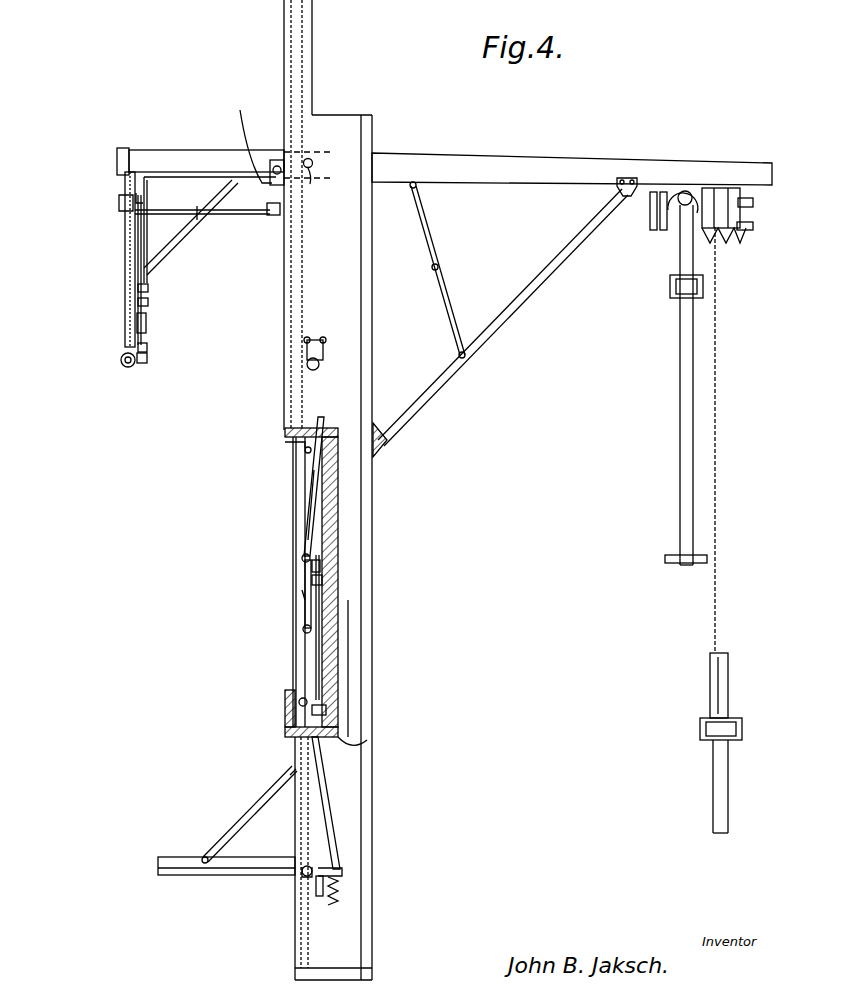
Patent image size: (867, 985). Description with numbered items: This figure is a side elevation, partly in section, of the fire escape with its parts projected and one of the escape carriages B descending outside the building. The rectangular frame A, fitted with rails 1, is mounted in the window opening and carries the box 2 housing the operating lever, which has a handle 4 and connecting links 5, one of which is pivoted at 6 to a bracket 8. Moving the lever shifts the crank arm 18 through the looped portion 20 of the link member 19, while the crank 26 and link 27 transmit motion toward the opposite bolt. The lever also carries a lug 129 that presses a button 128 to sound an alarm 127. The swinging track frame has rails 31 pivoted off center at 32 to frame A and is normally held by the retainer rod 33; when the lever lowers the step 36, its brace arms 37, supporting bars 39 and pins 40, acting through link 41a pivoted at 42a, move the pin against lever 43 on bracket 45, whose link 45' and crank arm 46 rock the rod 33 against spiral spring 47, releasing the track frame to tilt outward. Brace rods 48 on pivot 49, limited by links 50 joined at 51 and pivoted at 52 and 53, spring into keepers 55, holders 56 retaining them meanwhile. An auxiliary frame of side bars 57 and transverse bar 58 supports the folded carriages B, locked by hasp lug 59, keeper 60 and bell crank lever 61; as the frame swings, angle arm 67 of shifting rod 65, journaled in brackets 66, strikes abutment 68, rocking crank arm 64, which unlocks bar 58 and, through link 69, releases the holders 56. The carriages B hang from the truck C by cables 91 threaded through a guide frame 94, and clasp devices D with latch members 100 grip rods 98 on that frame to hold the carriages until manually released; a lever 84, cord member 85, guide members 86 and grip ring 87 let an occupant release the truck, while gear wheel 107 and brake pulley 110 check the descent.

The rails 1 is at (283, 47).
The rectangular frame A is at (350, 118).
The box 2 is at (293, 535).
The handle 4 is at (303, 632).
The connecting links 5 is at (305, 600).
The pivot 6 is at (304, 563).
The bracket 8 is at (340, 541).
The crank arm 18 is at (300, 445).
The link member 19 is at (312, 520).
The looped portion 20 is at (310, 475).
The crank 26 is at (367, 742).
The link 27 is at (321, 676).
The rails 31 is at (510, 160).
The pivot 32 is at (308, 180).
The retainer rod 33 is at (340, 700).
The step 36 is at (172, 856).
The brace arms 37 is at (240, 822).
The supporting bars 39 is at (238, 876).
The pins 40 is at (302, 866).
The link 41a is at (296, 770).
The pivot 42a is at (300, 592).
The lever 43 is at (342, 868).
The bracket 45 is at (291, 908).
The link 45' is at (360, 803).
The crank arm 46 is at (298, 702).
The spiral spring 47 is at (340, 888).
The brace rods 48 is at (522, 298).
The pivot 49 is at (628, 178).
The links 50 is at (455, 308).
The pivot 51 is at (432, 272).
The pivot 52 is at (410, 190).
The pivot 53 is at (466, 360).
The keepers 55 is at (390, 446).
The holders 56 is at (274, 166).
The side bars 57 is at (148, 287).
The transverse bar 58 is at (147, 358).
The hasp lug 59 is at (147, 347).
The keeper 60 is at (122, 364).
The bell crank lever 61 is at (146, 322).
The crank arm 64 is at (139, 192).
The shifting rod 65 is at (165, 172).
The brackets 66 is at (197, 209).
The angle arm 67 is at (248, 138).
The abutment 68 is at (266, 207).
The link 69 is at (148, 302).
The lever 84 is at (112, 150).
The cord member 85 is at (124, 180).
The guide members 86 is at (137, 330).
The grip ring 87 is at (126, 367).
The cables 91 is at (716, 410).
The guide frame 94 is at (709, 688).
The rods 98 is at (670, 282).
The latch members 100 is at (656, 231).
The gear wheel 107 is at (753, 201).
The brake pulley 110 is at (753, 227).
The alarm 127 is at (307, 350).
The button 128 is at (340, 589).
The lug 129 is at (322, 572).
The escape carriages B is at (679, 430).
The truck C is at (732, 242).
The clasp devices D is at (698, 185).